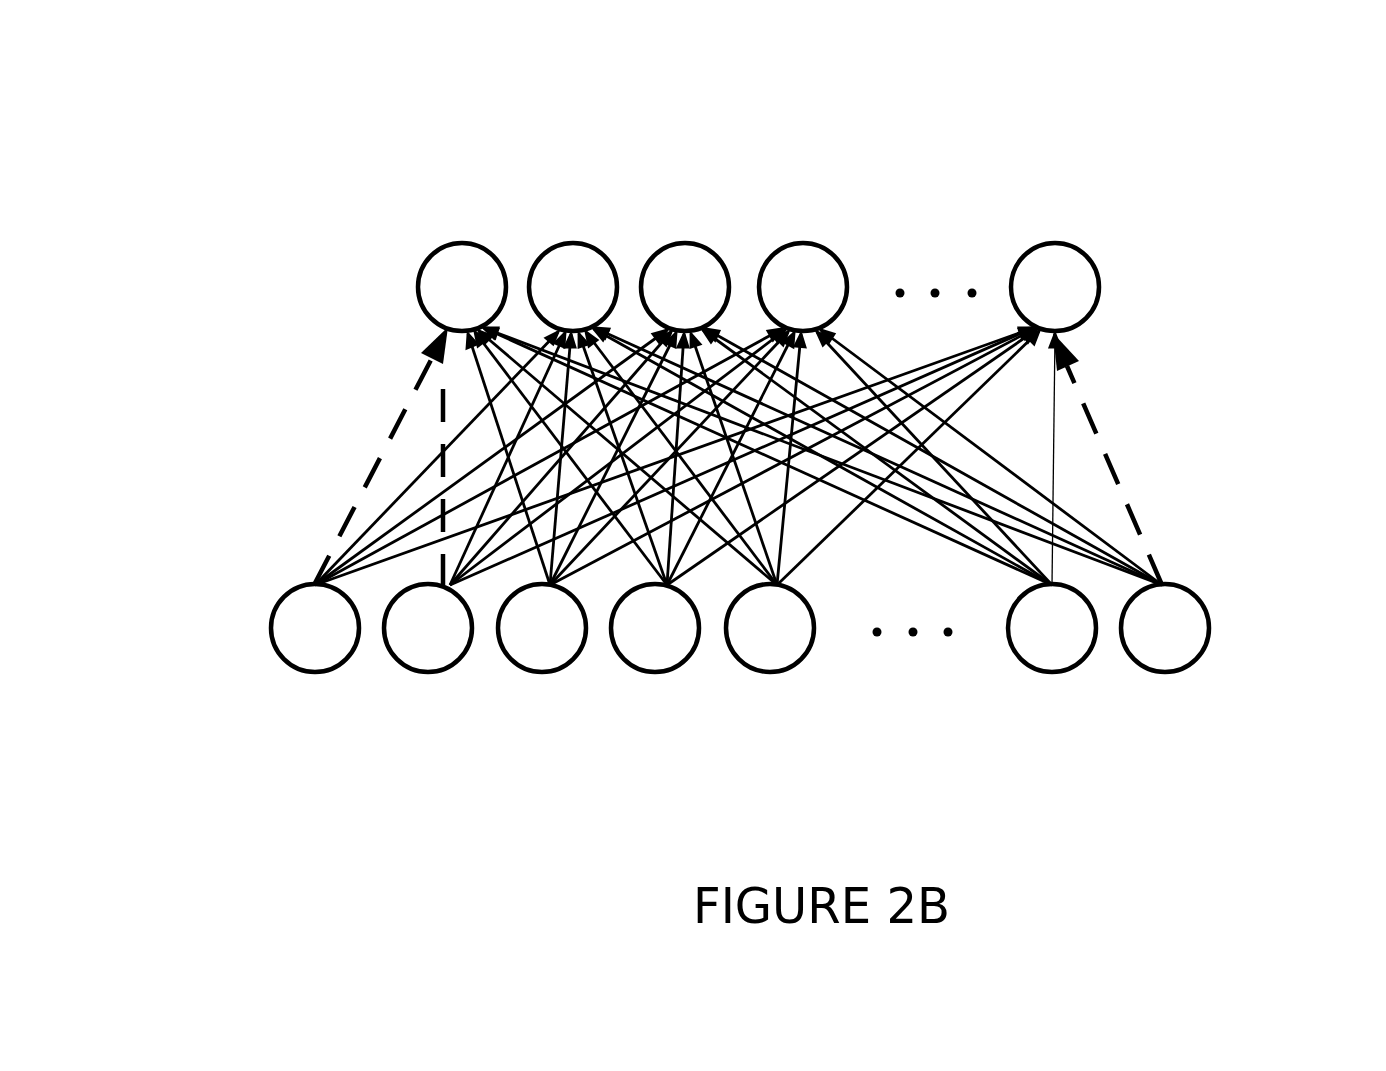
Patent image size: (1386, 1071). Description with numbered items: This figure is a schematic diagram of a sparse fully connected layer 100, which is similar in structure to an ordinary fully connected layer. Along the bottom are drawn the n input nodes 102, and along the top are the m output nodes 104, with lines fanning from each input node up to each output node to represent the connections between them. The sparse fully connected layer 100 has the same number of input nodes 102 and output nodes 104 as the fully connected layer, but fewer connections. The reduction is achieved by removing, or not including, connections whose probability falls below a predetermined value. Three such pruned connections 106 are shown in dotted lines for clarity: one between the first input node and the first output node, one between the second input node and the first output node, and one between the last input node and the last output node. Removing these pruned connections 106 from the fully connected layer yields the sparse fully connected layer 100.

The sparse fully connected layer 100 is at (1243, 92).
The input nodes 102 is at (275, 640).
The output nodes 104 is at (417, 290).
The pruned connections 106 is at (425, 372).